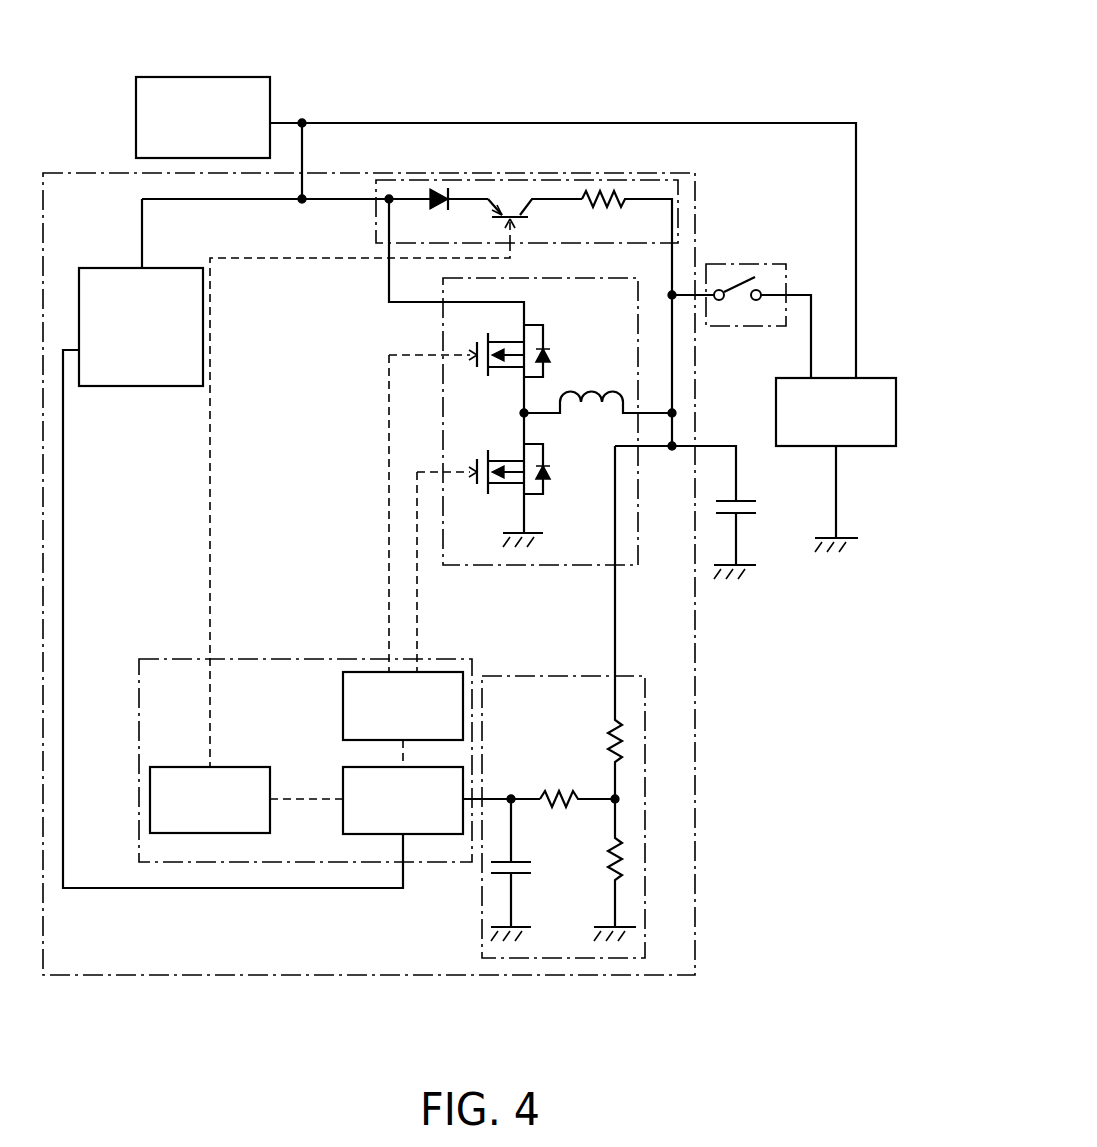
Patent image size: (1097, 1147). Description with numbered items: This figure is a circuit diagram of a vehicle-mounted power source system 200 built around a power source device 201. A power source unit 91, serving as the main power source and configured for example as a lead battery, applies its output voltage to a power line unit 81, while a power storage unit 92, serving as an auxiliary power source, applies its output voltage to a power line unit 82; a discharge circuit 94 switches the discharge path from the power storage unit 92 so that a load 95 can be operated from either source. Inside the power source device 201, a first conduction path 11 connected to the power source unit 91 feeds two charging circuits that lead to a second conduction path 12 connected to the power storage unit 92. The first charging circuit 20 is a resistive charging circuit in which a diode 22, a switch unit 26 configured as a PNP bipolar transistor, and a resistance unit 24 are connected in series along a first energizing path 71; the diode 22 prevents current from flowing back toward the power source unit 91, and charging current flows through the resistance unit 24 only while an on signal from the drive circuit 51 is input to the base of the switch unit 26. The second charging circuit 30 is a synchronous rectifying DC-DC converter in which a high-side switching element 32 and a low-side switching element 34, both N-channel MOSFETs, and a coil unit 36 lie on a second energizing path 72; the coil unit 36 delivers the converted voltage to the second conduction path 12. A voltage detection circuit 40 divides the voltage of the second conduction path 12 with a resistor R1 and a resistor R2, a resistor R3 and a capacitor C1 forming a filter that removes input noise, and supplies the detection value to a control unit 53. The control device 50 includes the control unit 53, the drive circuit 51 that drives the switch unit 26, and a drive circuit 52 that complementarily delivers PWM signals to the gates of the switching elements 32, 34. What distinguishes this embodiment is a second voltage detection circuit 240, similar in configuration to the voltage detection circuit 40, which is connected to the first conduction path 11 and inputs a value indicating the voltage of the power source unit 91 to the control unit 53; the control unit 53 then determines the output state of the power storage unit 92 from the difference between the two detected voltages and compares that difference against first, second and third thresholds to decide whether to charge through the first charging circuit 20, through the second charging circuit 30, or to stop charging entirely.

The vehicle-mounted power source system 200 is at (845, 50).
The power source device 201 is at (695, 855).
The power source unit 91 is at (255, 77).
The power line unit 81 is at (305, 115).
The first conduction path 11 is at (338, 207).
The first charging circuit 20 is at (678, 187).
The diode 22 is at (440, 188).
The first energizing path 71 is at (552, 193).
The switch unit 26 is at (525, 207).
The resistance unit 24 is at (618, 199).
The second voltage detection circuit 240 is at (145, 386).
The discharge circuit 94 is at (725, 265).
The load 95 is at (896, 420).
The second energizing path 72 is at (535, 310).
The second charging circuit 30 is at (443, 330).
The switching element 32 is at (503, 372).
The switching element 34 is at (503, 488).
The coil unit 36 is at (568, 393).
The second conduction path 12 is at (677, 425).
The power line unit 82 is at (712, 446).
The power storage unit 92 is at (745, 500).
The control device 50 is at (283, 659).
The drive circuit 51 is at (240, 767).
The drive circuit 52 is at (343, 703).
The control unit 53 is at (343, 790).
The voltage detection circuit 40 is at (515, 676).
The resistor R1 is at (608, 750).
The resistor R2 is at (608, 865).
The resistor R3 is at (572, 812).
The capacitor C1 is at (520, 875).